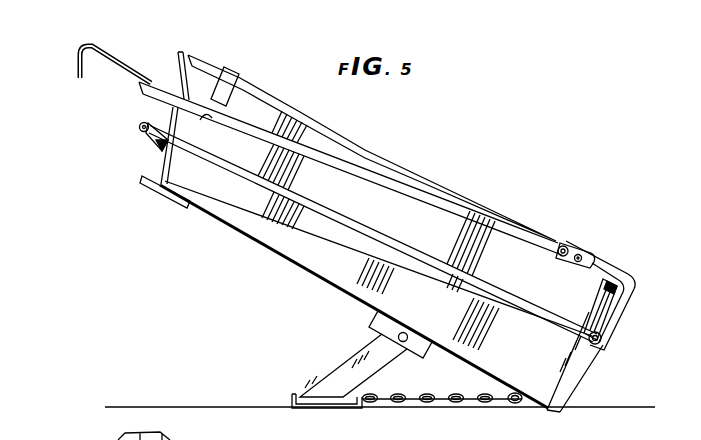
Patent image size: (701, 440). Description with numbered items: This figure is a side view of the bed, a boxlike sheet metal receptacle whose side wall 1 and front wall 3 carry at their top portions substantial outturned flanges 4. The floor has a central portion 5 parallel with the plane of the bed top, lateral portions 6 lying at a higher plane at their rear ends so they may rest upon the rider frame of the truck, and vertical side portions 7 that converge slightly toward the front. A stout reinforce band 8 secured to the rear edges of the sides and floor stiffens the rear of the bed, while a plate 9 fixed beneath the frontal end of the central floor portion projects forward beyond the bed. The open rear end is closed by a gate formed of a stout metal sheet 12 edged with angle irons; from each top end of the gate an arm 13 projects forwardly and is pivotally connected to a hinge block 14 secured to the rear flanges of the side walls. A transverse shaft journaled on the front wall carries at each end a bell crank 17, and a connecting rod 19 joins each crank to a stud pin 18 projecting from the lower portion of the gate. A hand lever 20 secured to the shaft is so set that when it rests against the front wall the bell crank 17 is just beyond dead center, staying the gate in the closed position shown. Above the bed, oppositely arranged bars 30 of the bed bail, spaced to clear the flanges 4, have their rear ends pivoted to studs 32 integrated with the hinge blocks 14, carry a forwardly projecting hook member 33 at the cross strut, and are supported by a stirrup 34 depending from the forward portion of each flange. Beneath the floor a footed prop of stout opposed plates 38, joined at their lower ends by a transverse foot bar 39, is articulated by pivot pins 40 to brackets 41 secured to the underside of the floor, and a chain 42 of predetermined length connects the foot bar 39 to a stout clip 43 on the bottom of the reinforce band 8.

The side wall 1 is at (250, 206).
The front wall 3 is at (163, 162).
The outturned flange 4 is at (354, 143).
The central portion of the floor 5 is at (322, 279).
The lateral portion of the floor 6 is at (336, 242).
The vertical side portion of the floor 7 is at (283, 243).
The reinforce band 8 is at (587, 304).
The plate 9 is at (172, 198).
The gate sheet 12 is at (571, 383).
The arm 13 is at (620, 269).
The hinge block 14 is at (590, 256).
The bell crank 17 is at (152, 140).
The stud pin 18 is at (604, 338).
The connecting rod 19 is at (402, 248).
The hand lever 20 is at (175, 58).
The bar 30 is at (351, 167).
The stud 32 is at (565, 245).
The hook member 33 is at (74, 58).
The stirrup 34 is at (227, 103).
The prop plate 38 is at (343, 366).
The foot bar 39 is at (292, 394).
The pivot pin 40 is at (397, 336).
The bracket 41 is at (427, 351).
The chain 42 is at (450, 394).
The clip 43 is at (518, 388).